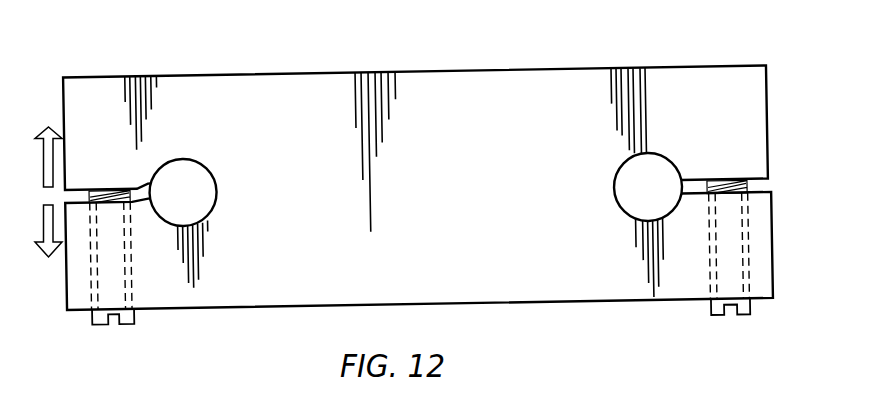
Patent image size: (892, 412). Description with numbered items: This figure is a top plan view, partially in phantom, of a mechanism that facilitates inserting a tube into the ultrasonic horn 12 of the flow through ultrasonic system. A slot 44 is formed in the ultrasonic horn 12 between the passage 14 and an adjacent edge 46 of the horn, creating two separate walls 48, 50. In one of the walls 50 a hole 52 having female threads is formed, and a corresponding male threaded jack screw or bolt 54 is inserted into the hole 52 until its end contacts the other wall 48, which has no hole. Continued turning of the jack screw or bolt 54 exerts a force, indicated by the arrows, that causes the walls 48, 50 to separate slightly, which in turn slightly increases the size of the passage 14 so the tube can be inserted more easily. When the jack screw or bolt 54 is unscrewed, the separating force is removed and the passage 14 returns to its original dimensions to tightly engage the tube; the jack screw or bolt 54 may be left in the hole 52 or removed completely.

The ultrasonic horn 12 is at (445, 191).
The passage 14 is at (626, 186).
The slot 44 is at (757, 185).
The edge 46 is at (765, 283).
The wall 48 is at (737, 77).
The wall 50 is at (758, 272).
The hole 52 is at (752, 236).
The jack screw or bolt 54 is at (708, 308).